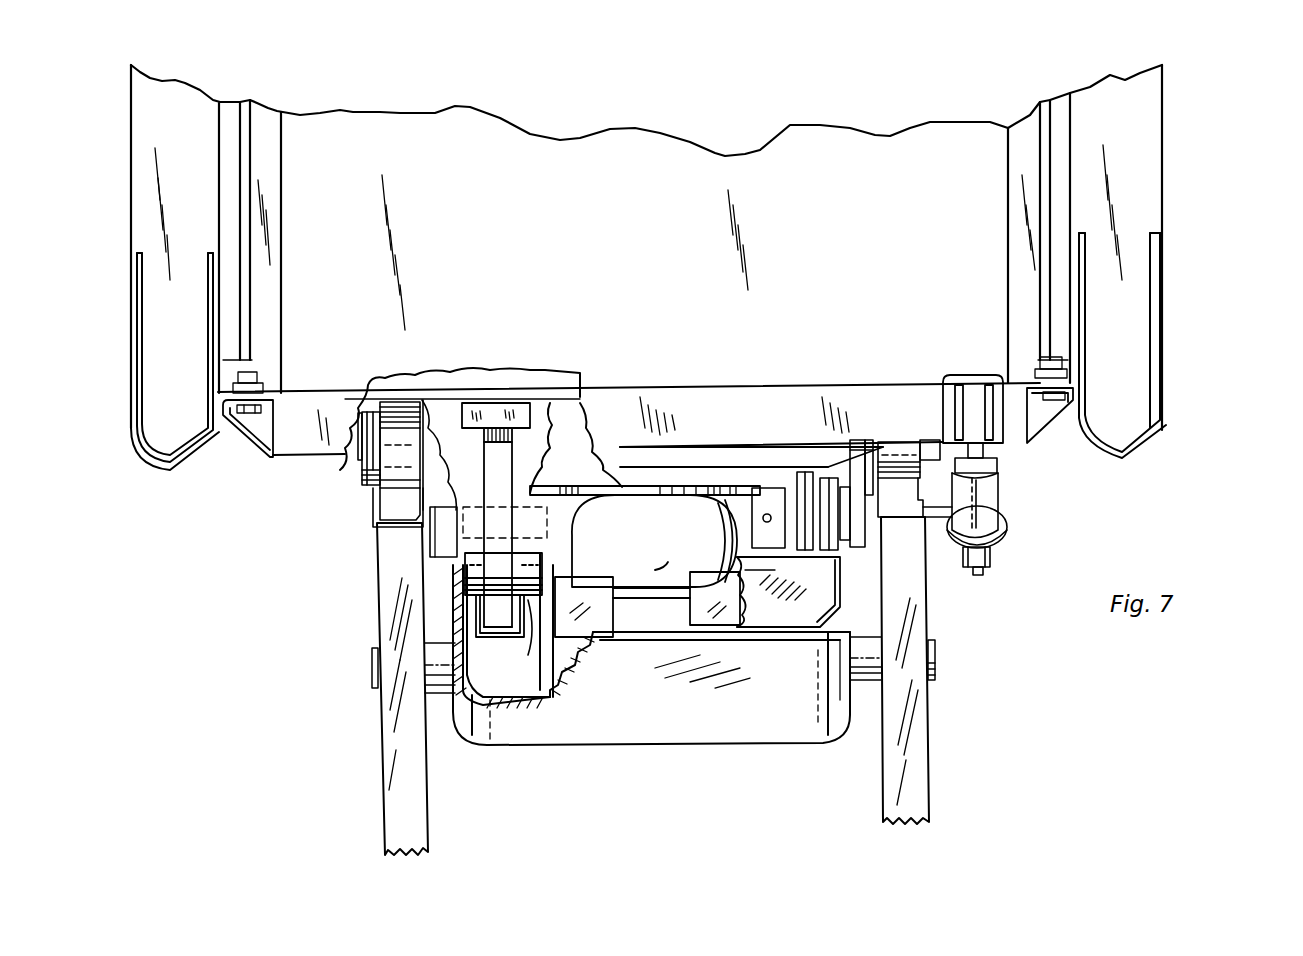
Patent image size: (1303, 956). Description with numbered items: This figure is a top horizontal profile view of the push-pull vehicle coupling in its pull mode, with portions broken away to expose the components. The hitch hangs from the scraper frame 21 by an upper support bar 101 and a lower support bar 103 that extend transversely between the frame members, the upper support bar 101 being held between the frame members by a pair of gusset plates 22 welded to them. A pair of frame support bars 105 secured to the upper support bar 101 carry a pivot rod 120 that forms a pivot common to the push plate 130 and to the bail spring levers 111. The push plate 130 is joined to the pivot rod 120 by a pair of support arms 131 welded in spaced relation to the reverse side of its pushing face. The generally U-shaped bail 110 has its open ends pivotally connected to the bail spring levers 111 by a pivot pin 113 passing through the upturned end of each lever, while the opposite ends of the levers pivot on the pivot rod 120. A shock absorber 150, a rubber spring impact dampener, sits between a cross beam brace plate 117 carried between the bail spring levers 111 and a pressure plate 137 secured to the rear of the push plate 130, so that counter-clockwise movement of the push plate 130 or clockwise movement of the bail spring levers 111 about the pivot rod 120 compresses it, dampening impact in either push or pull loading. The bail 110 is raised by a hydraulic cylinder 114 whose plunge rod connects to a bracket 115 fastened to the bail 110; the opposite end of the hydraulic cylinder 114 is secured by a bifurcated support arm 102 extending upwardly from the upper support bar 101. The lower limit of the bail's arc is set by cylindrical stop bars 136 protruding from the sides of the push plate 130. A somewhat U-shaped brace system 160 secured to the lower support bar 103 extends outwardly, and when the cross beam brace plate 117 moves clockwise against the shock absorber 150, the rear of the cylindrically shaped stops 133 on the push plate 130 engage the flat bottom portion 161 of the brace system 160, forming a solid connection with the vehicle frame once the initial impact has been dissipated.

The scraper frame 21 is at (225, 385).
The gusset plate 22 is at (194, 450).
The upper support bar 101 is at (345, 391).
The bifurcated support arm 102 is at (975, 375).
The lower support bar 103 is at (514, 380).
The frame support bar 105 is at (828, 486).
The bail 110 is at (929, 750).
The bail spring lever 111 is at (430, 550).
The pivot pin 113 is at (352, 455).
The hydraulic cylinder 114 is at (1000, 497).
The bracket 115 is at (940, 540).
The cross beam brace plate 117 is at (620, 485).
The pivot rod 120 is at (375, 540).
The push plate 130 is at (650, 717).
The support arm 131 is at (803, 472).
The cylindrically shaped stop 133 is at (474, 672).
The cylindrical stop bar 136 is at (372, 676).
The pressure plate 137 is at (632, 592).
The shock absorber 150 is at (665, 533).
The brace system 160 is at (600, 480).
The bottom portion 161 is at (470, 648).